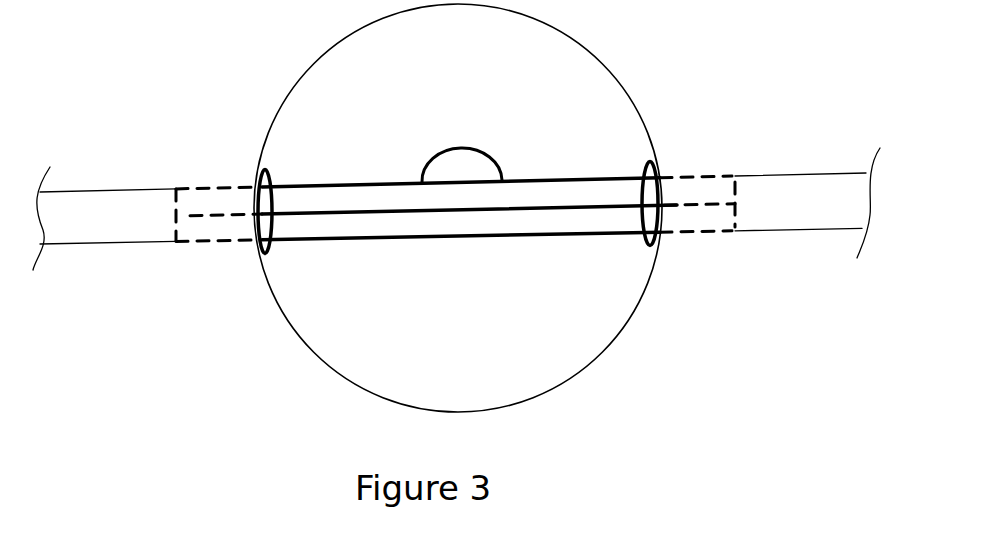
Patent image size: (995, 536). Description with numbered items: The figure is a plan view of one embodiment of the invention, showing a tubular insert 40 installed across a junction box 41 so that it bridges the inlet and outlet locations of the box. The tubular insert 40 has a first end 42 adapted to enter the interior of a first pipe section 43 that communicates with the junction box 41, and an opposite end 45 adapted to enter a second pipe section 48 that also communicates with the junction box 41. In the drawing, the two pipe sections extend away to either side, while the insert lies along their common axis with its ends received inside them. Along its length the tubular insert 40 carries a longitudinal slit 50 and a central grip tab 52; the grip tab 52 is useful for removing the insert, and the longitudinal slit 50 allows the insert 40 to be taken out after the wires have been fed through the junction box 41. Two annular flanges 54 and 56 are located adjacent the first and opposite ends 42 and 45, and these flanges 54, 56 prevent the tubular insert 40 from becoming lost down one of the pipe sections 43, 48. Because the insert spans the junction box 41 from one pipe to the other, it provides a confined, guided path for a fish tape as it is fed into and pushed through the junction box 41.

The tubular insert 40 is at (603, 236).
The junction box 41 is at (558, 37).
The first end 42 is at (203, 240).
The first pipe section 43 is at (85, 248).
The opposite end 45 is at (720, 182).
The second pipe section 48 is at (827, 223).
The longitudinal slit 50 is at (333, 217).
The central grip tab 52 is at (497, 167).
The annular flange 54 is at (264, 163).
The annular flange 56 is at (660, 164).